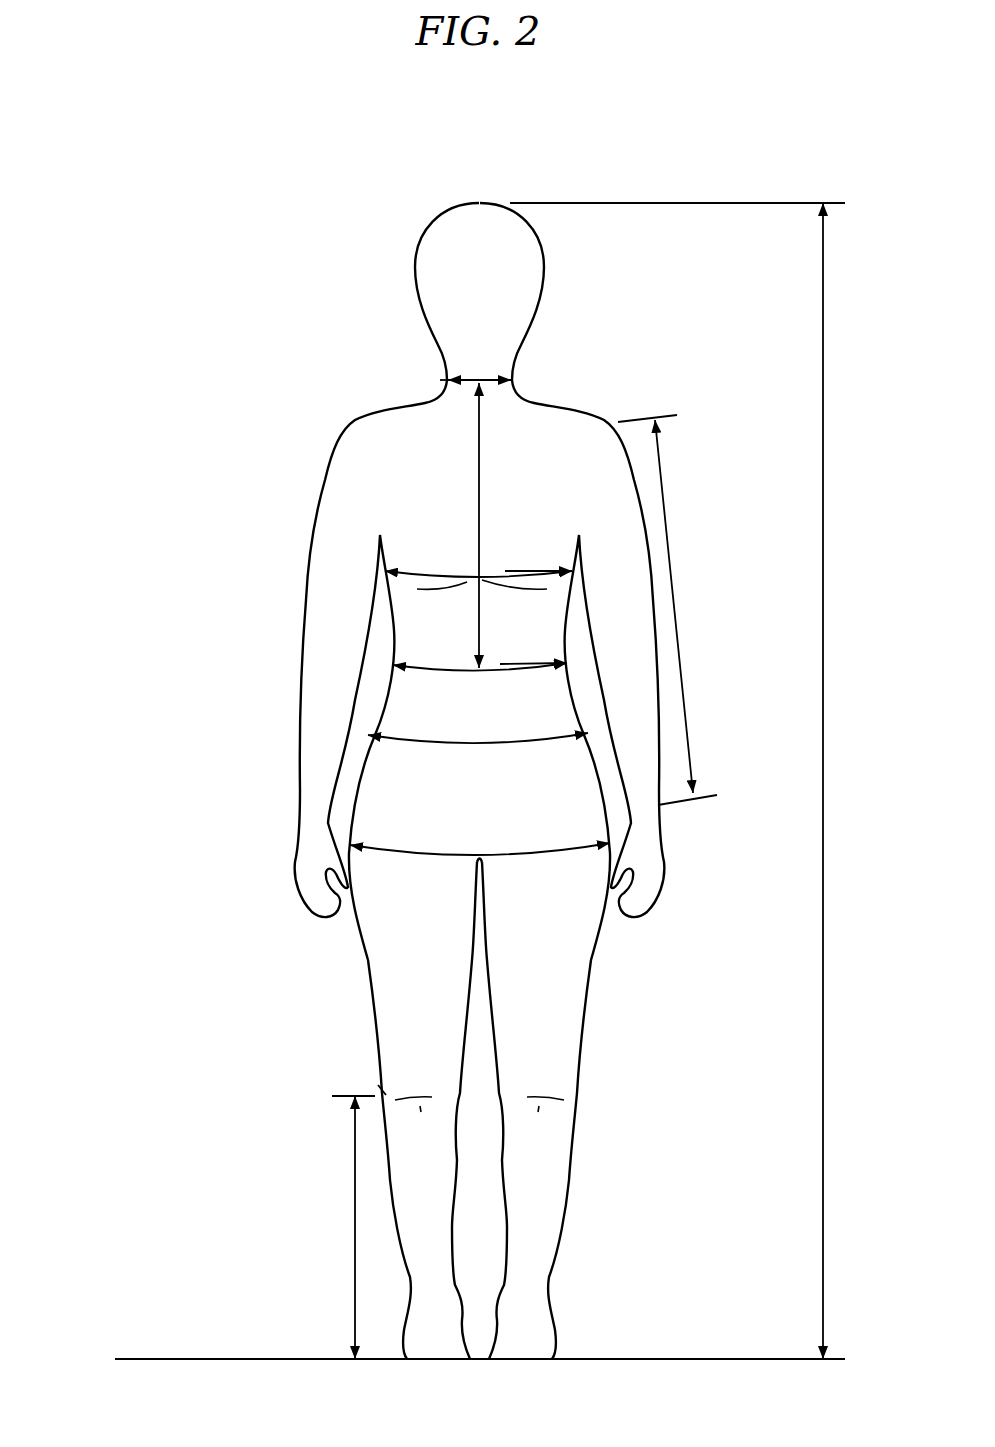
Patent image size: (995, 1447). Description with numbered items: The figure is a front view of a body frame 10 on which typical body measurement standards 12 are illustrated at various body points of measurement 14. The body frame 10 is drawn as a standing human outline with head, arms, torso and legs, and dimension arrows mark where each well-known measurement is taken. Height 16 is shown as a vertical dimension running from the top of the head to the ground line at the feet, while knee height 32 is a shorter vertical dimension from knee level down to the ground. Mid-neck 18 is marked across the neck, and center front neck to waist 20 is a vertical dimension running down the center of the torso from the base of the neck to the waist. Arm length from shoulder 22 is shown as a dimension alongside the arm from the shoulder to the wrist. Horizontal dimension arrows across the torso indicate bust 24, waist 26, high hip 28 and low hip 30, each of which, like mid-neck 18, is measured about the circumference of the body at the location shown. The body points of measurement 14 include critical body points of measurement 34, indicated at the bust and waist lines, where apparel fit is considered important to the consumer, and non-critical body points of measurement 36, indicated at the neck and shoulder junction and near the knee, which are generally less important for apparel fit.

The body frame 10 is at (544, 156).
The body measurement standards 12 is at (325, 289).
The body points of measurement 14 is at (627, 942).
The height 16 is at (823, 285).
The mid-neck 18 is at (497, 380).
The center front neck to waist 20 is at (477, 460).
The arm length from shoulder 22 is at (675, 612).
The bust 24 is at (435, 573).
The waist 26 is at (450, 668).
The high hip 28 is at (457, 747).
The low hip 30 is at (437, 858).
The knee height 32 is at (355, 1227).
The critical body points of measurement 34 is at (518, 570).
The non-critical body points of measurement 36 is at (444, 373).